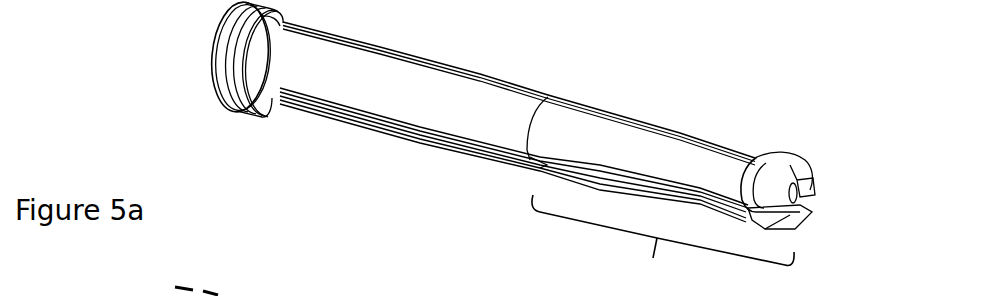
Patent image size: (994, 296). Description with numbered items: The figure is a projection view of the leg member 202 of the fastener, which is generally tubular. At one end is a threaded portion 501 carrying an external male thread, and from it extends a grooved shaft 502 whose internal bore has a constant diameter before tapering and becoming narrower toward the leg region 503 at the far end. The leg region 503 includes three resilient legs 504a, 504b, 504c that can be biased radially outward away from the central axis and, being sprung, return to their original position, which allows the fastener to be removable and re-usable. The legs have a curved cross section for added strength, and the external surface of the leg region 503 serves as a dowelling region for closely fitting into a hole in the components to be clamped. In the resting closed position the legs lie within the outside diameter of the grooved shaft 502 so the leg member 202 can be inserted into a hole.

The threaded portion 501 is at (211, 57).
The grooved shaft 502 is at (475, 108).
The leg member 202 is at (514, 155).
The leg region 503 is at (663, 245).
The resilient leg 504a is at (792, 232).
The resilient leg 504b is at (810, 178).
The resilient leg 504c is at (773, 178).